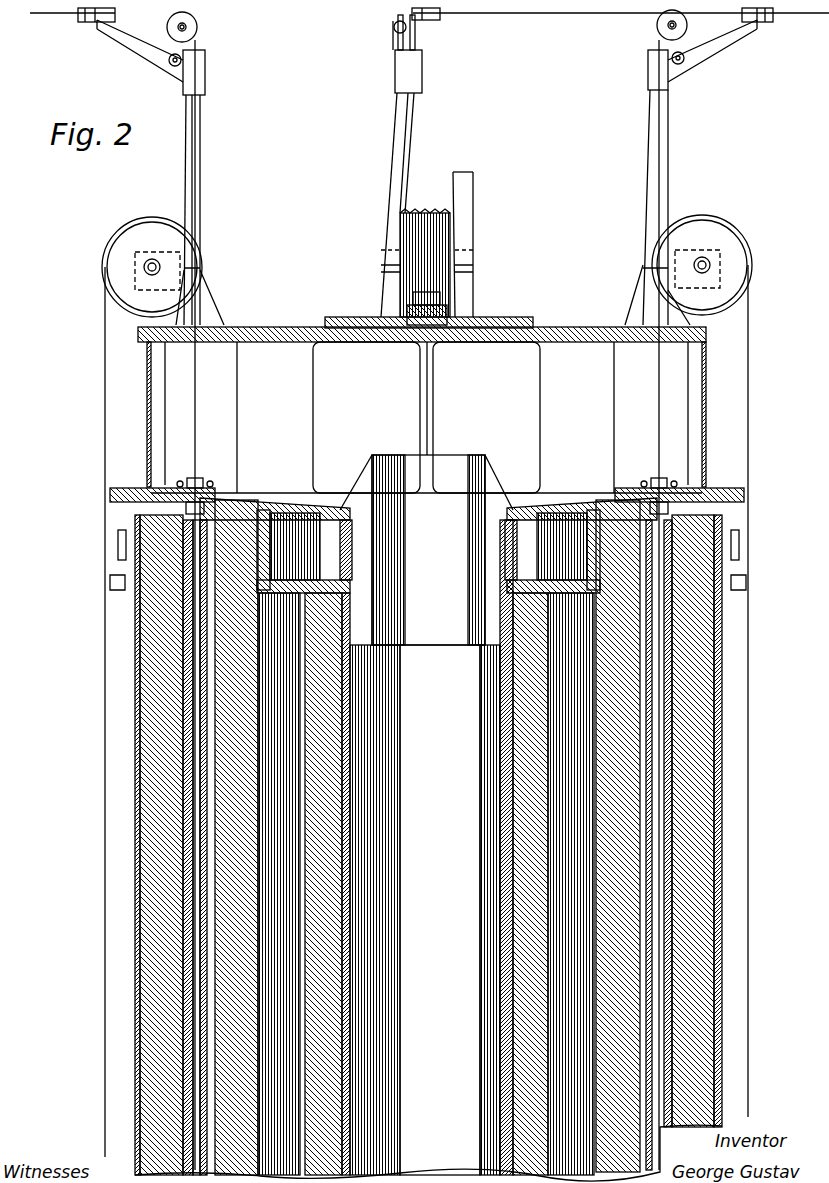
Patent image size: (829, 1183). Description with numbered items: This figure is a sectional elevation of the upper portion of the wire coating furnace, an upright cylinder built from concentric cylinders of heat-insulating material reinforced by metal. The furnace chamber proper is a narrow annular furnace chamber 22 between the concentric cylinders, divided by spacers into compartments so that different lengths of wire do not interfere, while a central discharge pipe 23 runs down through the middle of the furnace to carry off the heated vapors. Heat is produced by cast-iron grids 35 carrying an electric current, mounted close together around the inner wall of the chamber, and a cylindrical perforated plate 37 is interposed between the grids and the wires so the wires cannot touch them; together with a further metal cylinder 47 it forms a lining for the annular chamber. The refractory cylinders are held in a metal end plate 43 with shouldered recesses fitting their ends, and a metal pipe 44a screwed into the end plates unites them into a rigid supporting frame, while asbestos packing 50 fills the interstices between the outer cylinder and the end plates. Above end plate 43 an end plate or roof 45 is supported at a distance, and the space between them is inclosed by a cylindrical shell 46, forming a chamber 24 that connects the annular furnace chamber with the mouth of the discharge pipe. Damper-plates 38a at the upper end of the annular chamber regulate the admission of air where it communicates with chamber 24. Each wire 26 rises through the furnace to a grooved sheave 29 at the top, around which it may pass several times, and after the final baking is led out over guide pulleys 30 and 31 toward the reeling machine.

The annular furnace chamber 22 is at (190, 694).
The central discharge pipe 23 is at (502, 728).
The chamber 24 is at (426, 417).
The wire 26 is at (45, 14).
The sheave 29 is at (103, 265).
The guide pulley 30 is at (198, 22).
The guide pulley 31 is at (88, 24).
The cast-iron grids 35 is at (212, 752).
The cylindrical perforated plate 37 is at (200, 770).
The damper-plates 38a is at (200, 486).
The metal end plate 43 is at (272, 500).
The metal cylinder or pipe 44a is at (508, 927).
The end plate or roof 45 is at (292, 326).
The cylindrical shell 46 is at (147, 392).
The metal cylinder 47 is at (185, 840).
The asbestos packing 50 is at (125, 505).